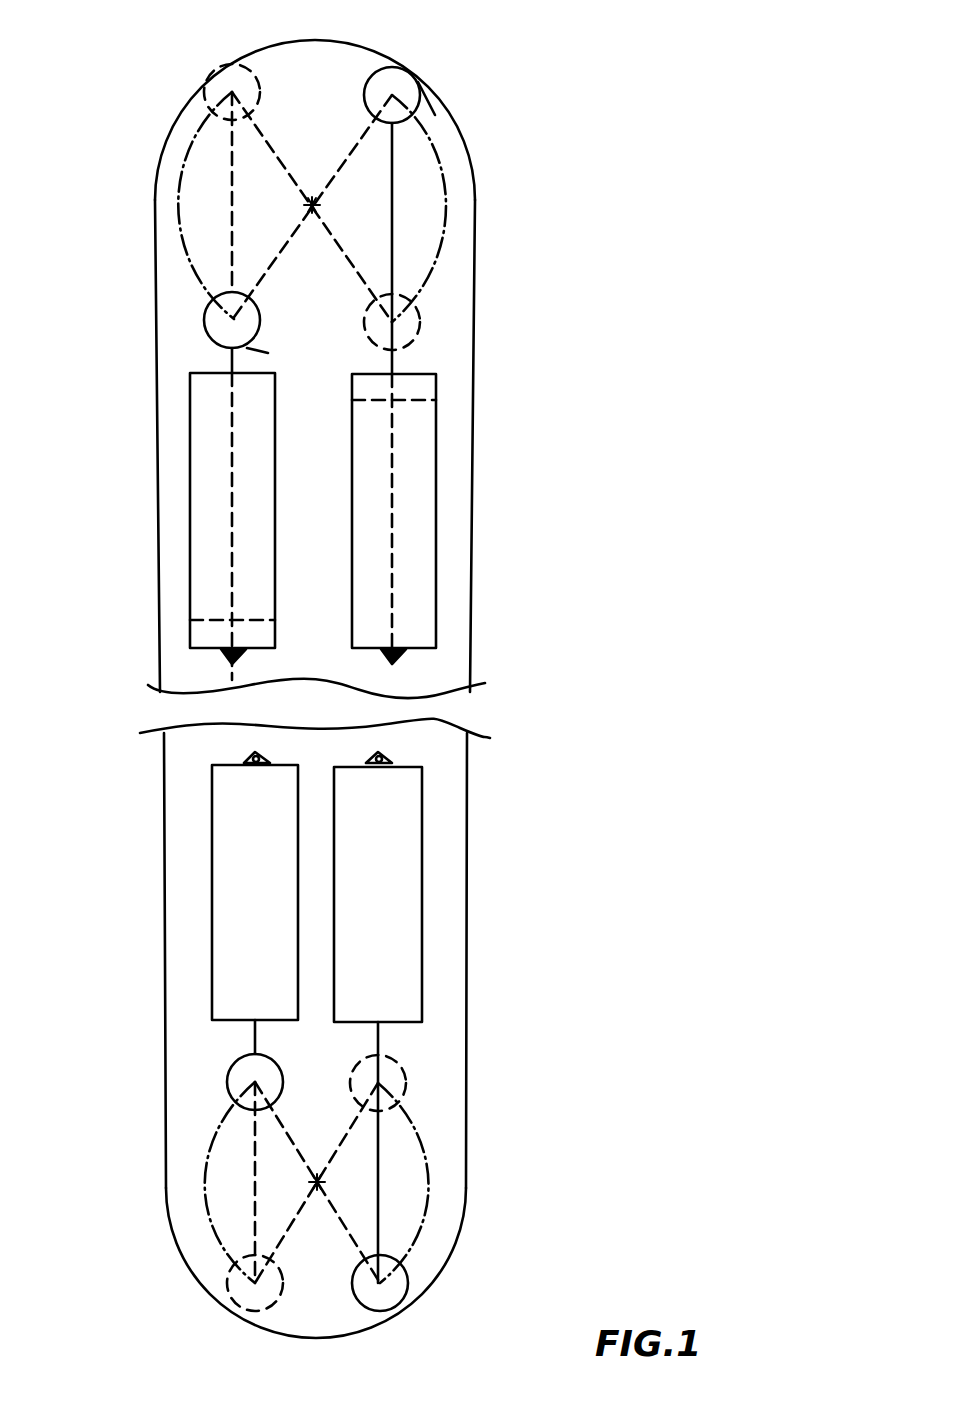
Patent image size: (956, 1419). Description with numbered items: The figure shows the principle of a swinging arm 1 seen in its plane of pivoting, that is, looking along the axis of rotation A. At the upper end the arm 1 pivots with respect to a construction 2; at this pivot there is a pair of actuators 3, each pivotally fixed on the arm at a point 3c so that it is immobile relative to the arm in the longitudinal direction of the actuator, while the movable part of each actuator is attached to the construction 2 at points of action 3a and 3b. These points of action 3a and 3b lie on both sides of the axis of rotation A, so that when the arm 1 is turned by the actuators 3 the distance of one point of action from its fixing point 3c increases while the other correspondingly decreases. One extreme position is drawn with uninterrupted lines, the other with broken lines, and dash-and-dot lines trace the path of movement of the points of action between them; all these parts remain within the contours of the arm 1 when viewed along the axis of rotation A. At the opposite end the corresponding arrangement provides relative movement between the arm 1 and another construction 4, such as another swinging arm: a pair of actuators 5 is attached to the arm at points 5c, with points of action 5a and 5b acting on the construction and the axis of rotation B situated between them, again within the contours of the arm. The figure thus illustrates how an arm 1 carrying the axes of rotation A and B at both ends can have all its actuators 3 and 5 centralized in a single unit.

The swinging arm 1 is at (472, 603).
The construction 2 is at (369, 62).
The actuators 3 is at (277, 467).
The point of action 3a is at (232, 320).
The point of action 3b is at (417, 80).
The fixing point 3c is at (232, 656).
The other construction 4 is at (225, 1078).
The actuators 5 is at (298, 867).
The point of action 5a is at (255, 1082).
The point of action 5b is at (350, 1317).
The attachment points 5c is at (248, 759).
The axis of rotation A is at (312, 203).
The axis of rotation B is at (317, 1178).